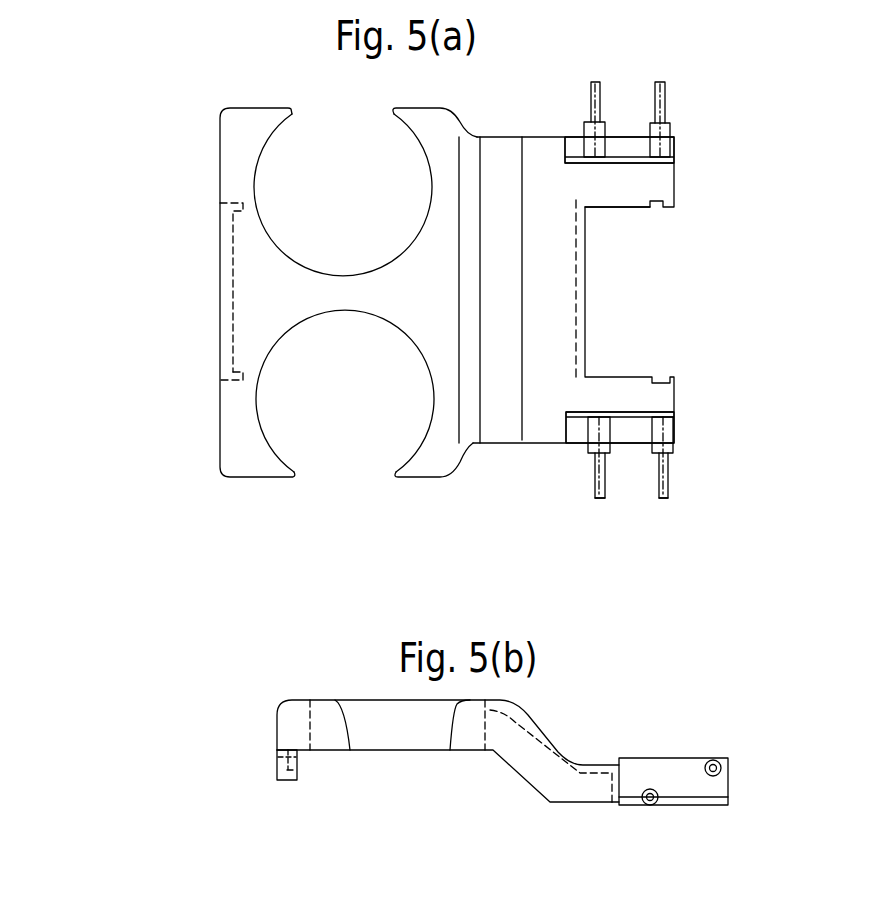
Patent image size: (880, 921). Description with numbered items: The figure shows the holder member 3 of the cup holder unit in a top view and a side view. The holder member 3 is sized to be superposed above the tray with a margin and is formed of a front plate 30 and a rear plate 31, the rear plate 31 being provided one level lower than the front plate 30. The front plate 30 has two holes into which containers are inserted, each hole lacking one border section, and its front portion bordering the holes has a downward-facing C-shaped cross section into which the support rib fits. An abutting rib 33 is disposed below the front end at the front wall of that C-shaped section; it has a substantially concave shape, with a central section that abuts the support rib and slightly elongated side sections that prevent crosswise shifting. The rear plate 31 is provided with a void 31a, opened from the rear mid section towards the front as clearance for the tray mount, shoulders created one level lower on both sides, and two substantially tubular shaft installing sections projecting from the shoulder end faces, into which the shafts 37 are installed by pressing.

The holder member 3 is at (219, 142).
The front plate 30 is at (252, 122).
The rear plate 31 is at (540, 148).
The void 31a is at (623, 208).
The abutting rib 33 is at (203, 740).
The shafts 37 is at (600, 500).